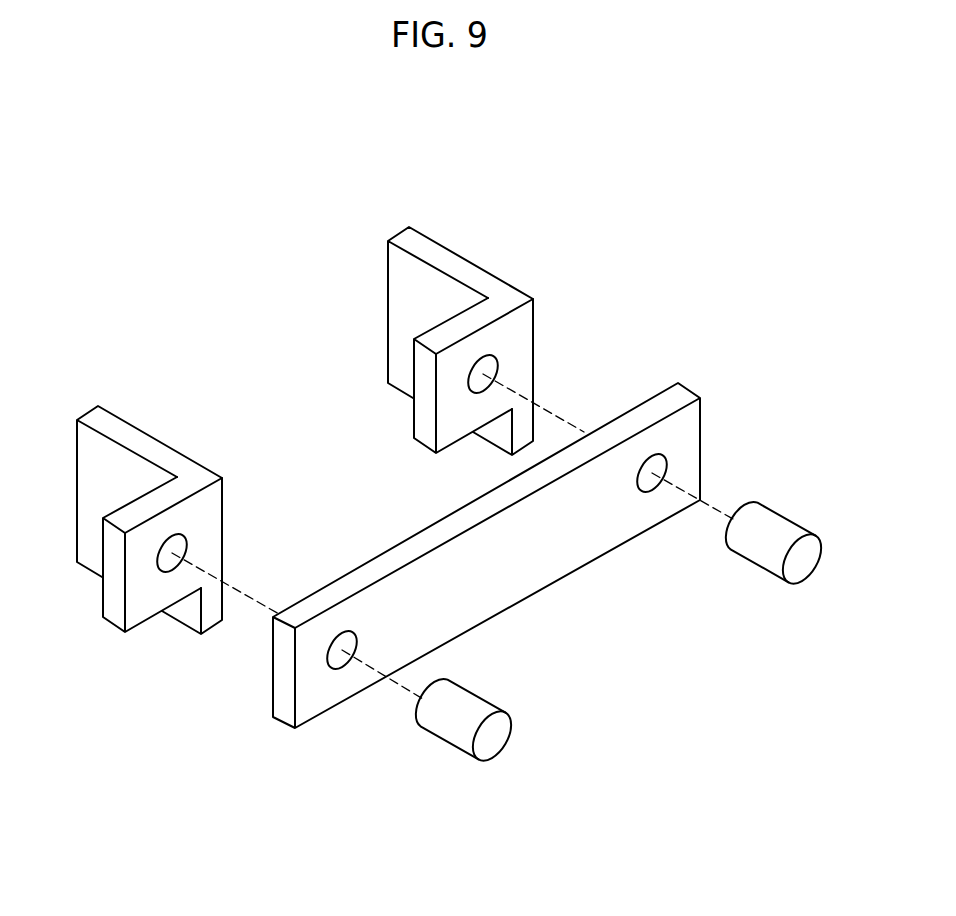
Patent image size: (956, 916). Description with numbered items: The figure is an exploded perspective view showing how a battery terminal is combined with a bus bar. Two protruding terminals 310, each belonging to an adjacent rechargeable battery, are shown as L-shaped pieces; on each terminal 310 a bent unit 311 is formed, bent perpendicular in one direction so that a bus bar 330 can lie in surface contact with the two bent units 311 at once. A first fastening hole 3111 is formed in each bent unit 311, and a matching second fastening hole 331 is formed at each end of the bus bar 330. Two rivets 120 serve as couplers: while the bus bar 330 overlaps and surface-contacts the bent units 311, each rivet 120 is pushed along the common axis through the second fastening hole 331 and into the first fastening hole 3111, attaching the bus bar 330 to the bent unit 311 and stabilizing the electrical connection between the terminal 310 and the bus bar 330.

The terminal 310 is at (195, 430).
The bent unit 311 is at (140, 614).
The first fastening hole 3111 is at (178, 551).
The bus bar 330 is at (543, 570).
The second fastening hole 331 is at (342, 660).
The rivet 120 is at (470, 708).